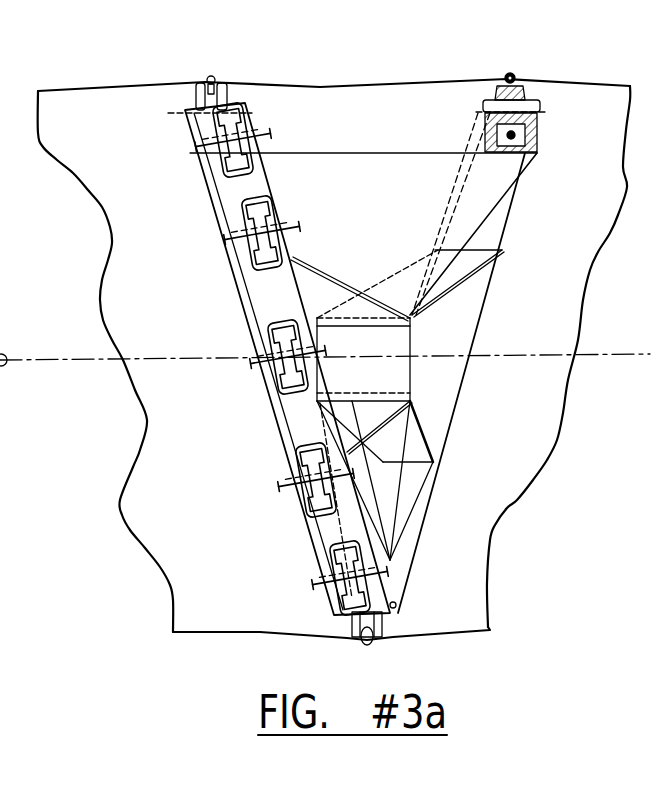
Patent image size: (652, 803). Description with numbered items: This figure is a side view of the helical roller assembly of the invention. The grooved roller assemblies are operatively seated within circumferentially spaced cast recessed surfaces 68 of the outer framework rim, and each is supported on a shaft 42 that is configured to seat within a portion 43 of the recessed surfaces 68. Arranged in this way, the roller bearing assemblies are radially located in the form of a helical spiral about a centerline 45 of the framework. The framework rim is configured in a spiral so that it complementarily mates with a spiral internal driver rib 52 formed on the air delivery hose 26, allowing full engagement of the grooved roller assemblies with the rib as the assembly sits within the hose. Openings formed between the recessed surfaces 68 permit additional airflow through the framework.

The air delivery hose 26 is at (95, 90).
The shafts 42 is at (205, 155).
The portion of the recessed surfaces 43 is at (214, 200).
The centerline 45 is at (27, 363).
The spiral internal driver rib 52 is at (207, 115).
The recessed surfaces 68 is at (267, 283).